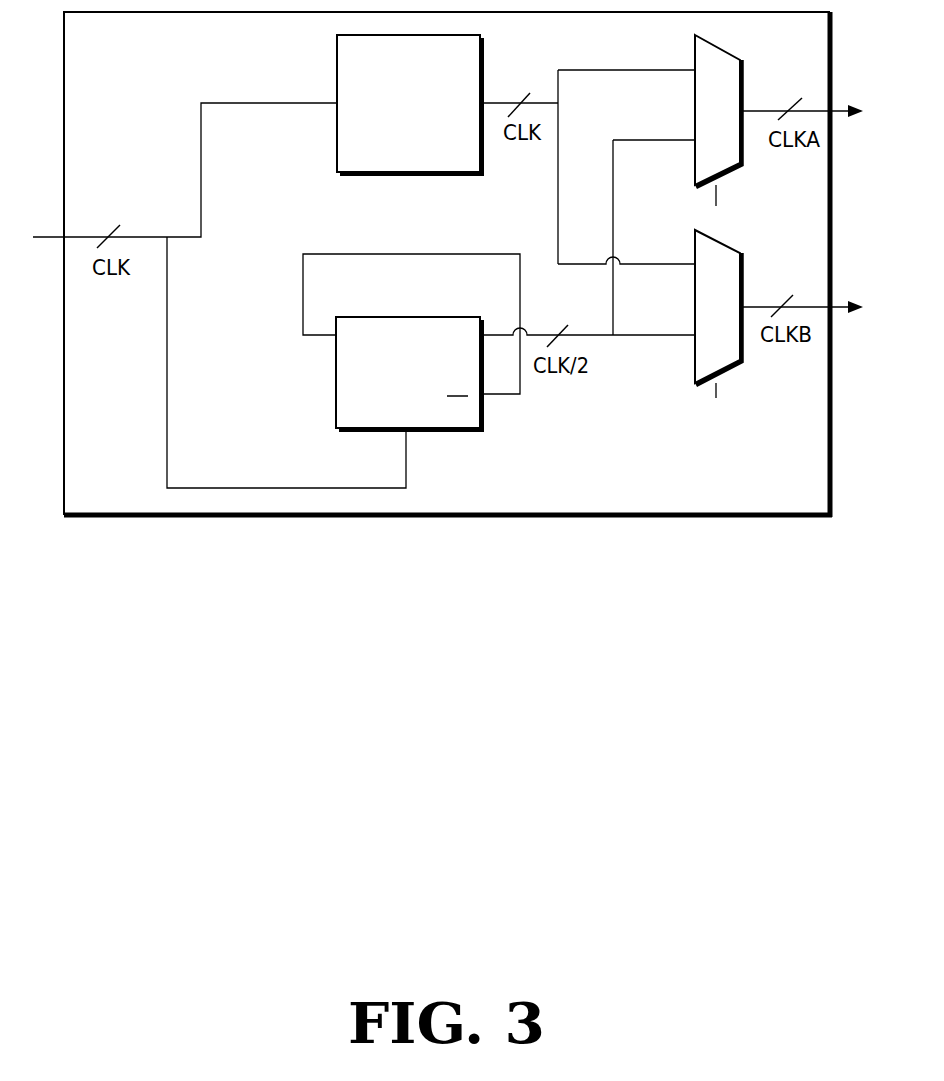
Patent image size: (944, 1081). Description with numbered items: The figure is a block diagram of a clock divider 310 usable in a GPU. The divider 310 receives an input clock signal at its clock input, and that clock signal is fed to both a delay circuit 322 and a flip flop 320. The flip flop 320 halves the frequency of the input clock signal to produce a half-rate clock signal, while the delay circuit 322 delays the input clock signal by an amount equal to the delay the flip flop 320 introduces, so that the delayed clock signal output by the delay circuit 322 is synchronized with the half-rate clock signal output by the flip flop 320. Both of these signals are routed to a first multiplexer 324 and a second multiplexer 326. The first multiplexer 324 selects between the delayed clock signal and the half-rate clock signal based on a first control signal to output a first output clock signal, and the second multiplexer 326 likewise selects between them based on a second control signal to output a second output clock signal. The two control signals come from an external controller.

The divider 310 is at (198, 38).
The flip flop 320 is at (381, 422).
The delay circuit 322 is at (391, 130).
The first multiplexer 324 is at (742, 78).
The second multiplexer 326 is at (742, 275).